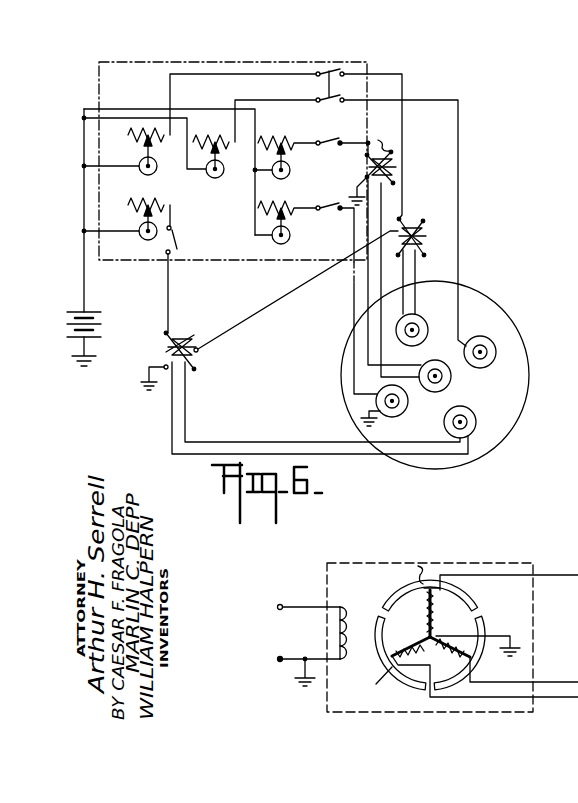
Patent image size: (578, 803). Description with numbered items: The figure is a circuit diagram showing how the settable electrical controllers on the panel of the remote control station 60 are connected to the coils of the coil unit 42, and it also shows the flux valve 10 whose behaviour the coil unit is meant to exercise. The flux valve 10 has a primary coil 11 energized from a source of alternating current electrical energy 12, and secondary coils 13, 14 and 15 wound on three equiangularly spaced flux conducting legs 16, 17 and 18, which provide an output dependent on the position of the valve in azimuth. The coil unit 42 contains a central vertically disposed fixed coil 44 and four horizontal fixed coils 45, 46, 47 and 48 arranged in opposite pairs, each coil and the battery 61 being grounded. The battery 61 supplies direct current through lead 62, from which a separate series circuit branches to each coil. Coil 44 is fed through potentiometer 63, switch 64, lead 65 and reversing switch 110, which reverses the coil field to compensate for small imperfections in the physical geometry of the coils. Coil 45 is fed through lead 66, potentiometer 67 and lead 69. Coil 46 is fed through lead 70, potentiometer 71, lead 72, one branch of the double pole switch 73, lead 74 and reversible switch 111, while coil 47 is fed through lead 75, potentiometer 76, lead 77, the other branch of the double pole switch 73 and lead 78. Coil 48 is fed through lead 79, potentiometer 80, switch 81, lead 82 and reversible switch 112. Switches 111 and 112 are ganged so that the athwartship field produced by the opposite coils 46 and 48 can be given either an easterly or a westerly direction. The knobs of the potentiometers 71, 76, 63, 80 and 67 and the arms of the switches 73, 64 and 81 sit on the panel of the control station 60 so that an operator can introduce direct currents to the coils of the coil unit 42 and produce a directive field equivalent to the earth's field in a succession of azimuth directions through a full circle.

The flux valve 10 is at (505, 563).
The primary coil 11 is at (343, 610).
The source of alternating current electrical energy 12 is at (274, 634).
The secondary coil 13 is at (440, 606).
The secondary coil 14 is at (460, 662).
The secondary coil 15 is at (412, 646).
The flux conducting leg 16 is at (411, 565).
The flux conducting leg 17 is at (484, 662).
The flux conducting leg 18 is at (379, 684).
The coil unit 42 is at (530, 328).
The central fixed coil 44 is at (452, 381).
The fixed coil 45 is at (406, 408).
The fixed coil 46 is at (418, 316).
The fixed coil 47 is at (496, 358).
The fixed coil 48 is at (478, 427).
The control station 60 is at (367, 62).
The battery 61 is at (97, 326).
The lead 62 is at (91, 108).
The potentiometer 63 is at (300, 160).
The switch 64 is at (346, 139).
The lead 65 is at (379, 136).
The lead 66 is at (258, 203).
The potentiometer 67 is at (298, 230).
The lead 69 is at (352, 306).
The lead 70 is at (112, 170).
The potentiometer 71 is at (134, 146).
The lead 72 is at (254, 72).
The double pole switch 73 is at (311, 82).
The lead 74 is at (402, 96).
The lead 75 is at (128, 122).
The potentiometer 76 is at (230, 160).
The lead 77 is at (275, 102).
The lead 78 is at (460, 144).
The lead 79 is at (110, 236).
The potentiometer 80 is at (126, 216).
The switch 81 is at (176, 243).
The lead 82 is at (168, 290).
The reversing switch 110 is at (386, 156).
The reversible switch 111 is at (413, 218).
The reversible switch 112 is at (181, 334).